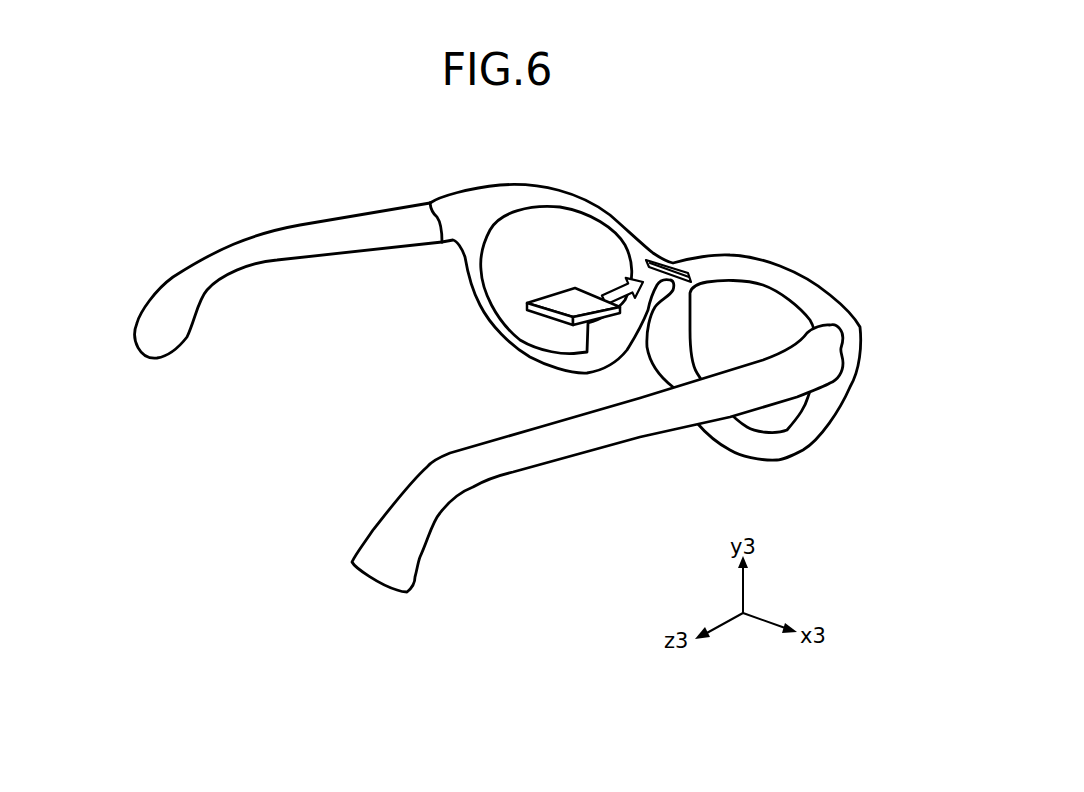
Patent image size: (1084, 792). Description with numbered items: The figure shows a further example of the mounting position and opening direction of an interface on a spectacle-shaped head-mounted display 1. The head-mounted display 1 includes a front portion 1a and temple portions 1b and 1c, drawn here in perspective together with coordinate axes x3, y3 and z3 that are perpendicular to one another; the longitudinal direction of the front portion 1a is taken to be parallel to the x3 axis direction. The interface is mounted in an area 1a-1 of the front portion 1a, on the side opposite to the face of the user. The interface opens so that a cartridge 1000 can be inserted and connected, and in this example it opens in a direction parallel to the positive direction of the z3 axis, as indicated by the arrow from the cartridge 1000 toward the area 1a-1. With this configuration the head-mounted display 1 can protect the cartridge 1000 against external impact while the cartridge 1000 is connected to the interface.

The head-mounted display 1 is at (257, 444).
The front portion 1a is at (572, 200).
The area of the front portion 1a-1 is at (663, 267).
The temple portion 1b is at (545, 457).
The temple portion 1c is at (267, 243).
The cartridge 1000 is at (557, 303).